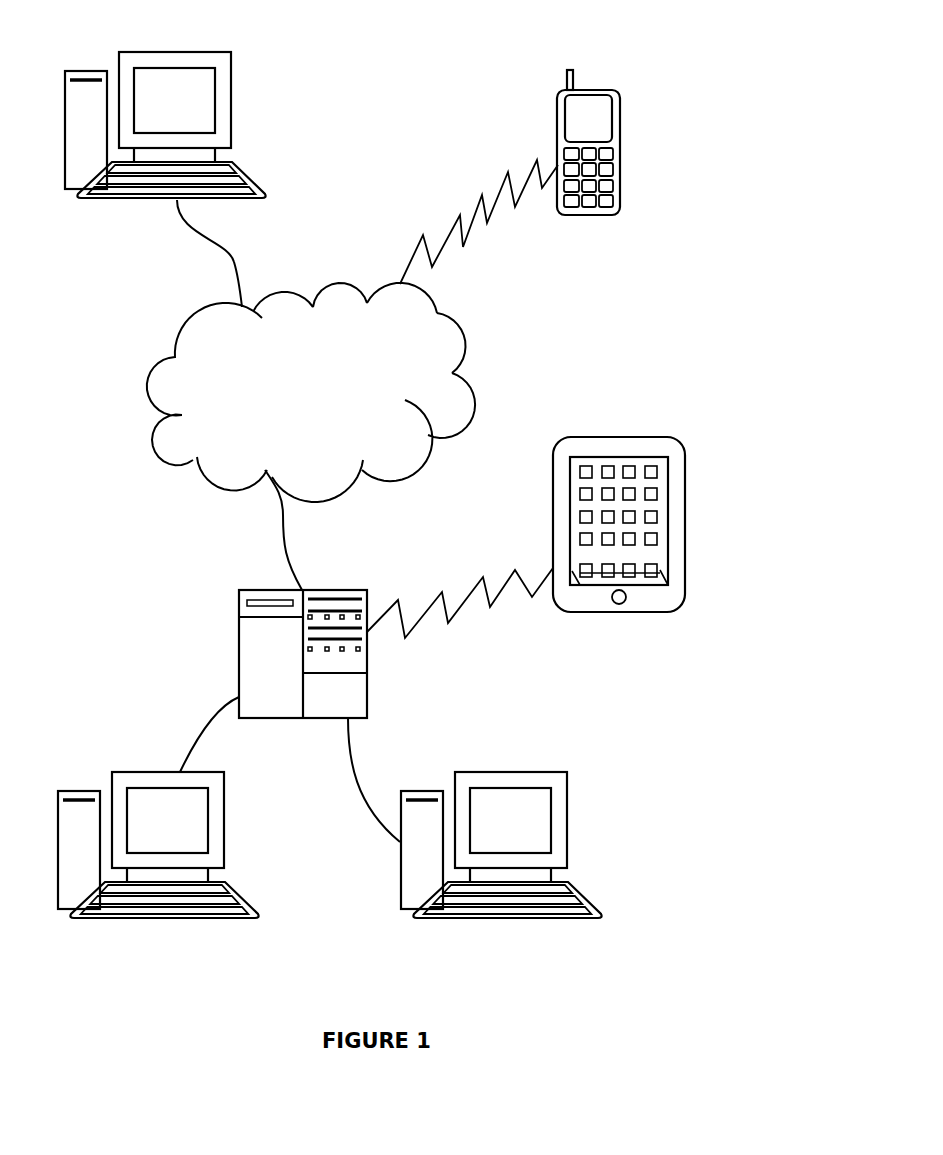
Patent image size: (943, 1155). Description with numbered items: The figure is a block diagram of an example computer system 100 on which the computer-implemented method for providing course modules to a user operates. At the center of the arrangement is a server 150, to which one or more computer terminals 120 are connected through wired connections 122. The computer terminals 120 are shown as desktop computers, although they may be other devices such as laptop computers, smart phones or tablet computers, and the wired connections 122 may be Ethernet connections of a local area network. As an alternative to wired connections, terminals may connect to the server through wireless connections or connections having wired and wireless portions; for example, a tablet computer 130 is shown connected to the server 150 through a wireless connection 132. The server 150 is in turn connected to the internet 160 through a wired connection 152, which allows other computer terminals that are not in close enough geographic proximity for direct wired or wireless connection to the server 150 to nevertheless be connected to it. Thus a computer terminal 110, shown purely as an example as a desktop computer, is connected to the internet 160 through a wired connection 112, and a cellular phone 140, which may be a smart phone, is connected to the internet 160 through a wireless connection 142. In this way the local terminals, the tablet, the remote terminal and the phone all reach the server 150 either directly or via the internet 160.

The system 100 is at (285, 964).
The computer terminal 110 is at (235, 82).
The wired connection 112 is at (225, 253).
The computer terminals 120 is at (93, 790).
The wired connections 122 is at (290, 769).
The tablet computer 130 is at (583, 437).
The wireless connection 132 is at (460, 592).
The cellular phone 140 is at (598, 217).
The wireless connection 142 is at (479, 222).
The server 150 is at (239, 653).
The wired connection 152 is at (273, 530).
The internet 160 is at (299, 449).